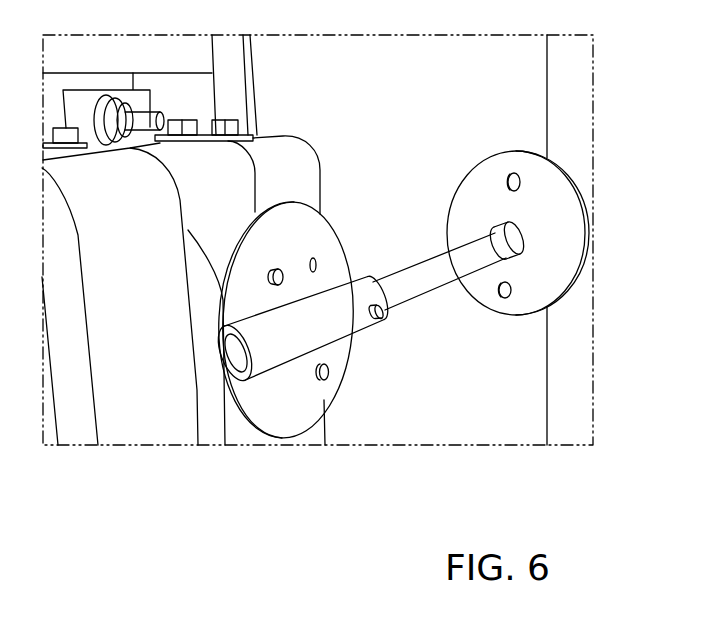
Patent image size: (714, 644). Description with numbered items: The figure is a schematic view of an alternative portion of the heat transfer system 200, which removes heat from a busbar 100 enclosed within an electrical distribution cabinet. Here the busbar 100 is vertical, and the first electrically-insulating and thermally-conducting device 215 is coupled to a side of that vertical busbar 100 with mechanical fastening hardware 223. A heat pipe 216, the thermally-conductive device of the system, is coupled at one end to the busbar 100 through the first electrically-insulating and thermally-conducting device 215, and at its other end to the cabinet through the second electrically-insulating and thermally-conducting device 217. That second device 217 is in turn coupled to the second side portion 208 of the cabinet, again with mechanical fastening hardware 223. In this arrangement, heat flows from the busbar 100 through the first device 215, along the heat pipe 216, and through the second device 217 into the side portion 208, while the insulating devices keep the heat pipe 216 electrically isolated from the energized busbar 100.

The busbar 100 is at (147, 222).
The heat transfer system 200 is at (382, 321).
The second side portion 208 is at (433, 115).
The first electrically-insulating and thermally-conducting device 215 is at (317, 327).
The heat pipe 216 is at (432, 270).
The second electrically-insulating and thermally-conducting device 217 is at (533, 282).
The mechanical fastening hardware 223 is at (265, 278).